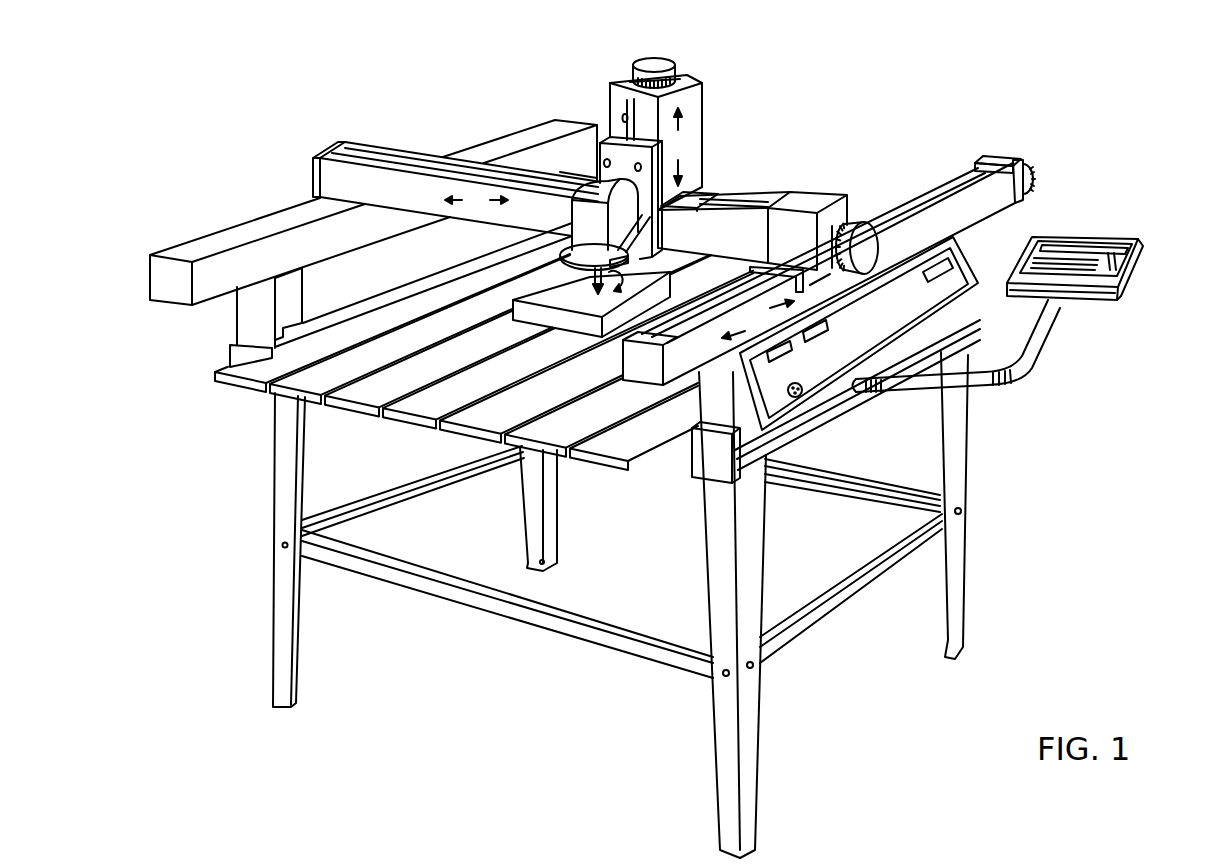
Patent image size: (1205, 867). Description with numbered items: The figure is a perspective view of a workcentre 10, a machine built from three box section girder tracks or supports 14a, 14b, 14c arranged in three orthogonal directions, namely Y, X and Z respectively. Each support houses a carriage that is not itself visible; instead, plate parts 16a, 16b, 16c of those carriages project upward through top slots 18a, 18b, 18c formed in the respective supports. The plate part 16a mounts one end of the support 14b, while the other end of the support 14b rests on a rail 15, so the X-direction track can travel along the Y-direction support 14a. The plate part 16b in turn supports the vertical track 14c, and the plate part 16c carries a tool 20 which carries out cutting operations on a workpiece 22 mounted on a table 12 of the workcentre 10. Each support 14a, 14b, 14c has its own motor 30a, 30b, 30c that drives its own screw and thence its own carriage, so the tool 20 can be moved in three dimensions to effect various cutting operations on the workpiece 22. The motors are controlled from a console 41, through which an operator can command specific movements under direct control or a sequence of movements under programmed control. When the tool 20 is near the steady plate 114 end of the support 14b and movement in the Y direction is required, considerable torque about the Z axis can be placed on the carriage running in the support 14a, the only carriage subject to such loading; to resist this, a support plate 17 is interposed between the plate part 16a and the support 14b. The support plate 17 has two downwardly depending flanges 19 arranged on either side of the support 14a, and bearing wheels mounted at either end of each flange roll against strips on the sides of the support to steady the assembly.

The workcentre 10 is at (1012, 72).
The table 12 is at (623, 443).
The support 14a is at (983, 200).
The support 14b is at (768, 205).
The support 14c is at (703, 100).
The rail 15 is at (257, 222).
The plate part 16a is at (770, 280).
The plate part 16b is at (705, 187).
The plate part 16c is at (610, 152).
The support plate 17 is at (820, 278).
The top slot 18a is at (957, 177).
The top slot 18b is at (740, 207).
The top slot 18c is at (620, 110).
The downwardly depending flanges 19 is at (751, 272).
The tool 20 is at (590, 235).
The workpiece 22 is at (567, 302).
The motor 30a is at (1028, 175).
The motor 30b is at (870, 238).
The motor 30c is at (650, 62).
The console 41 is at (1137, 240).
The steady plate 114 is at (313, 157).